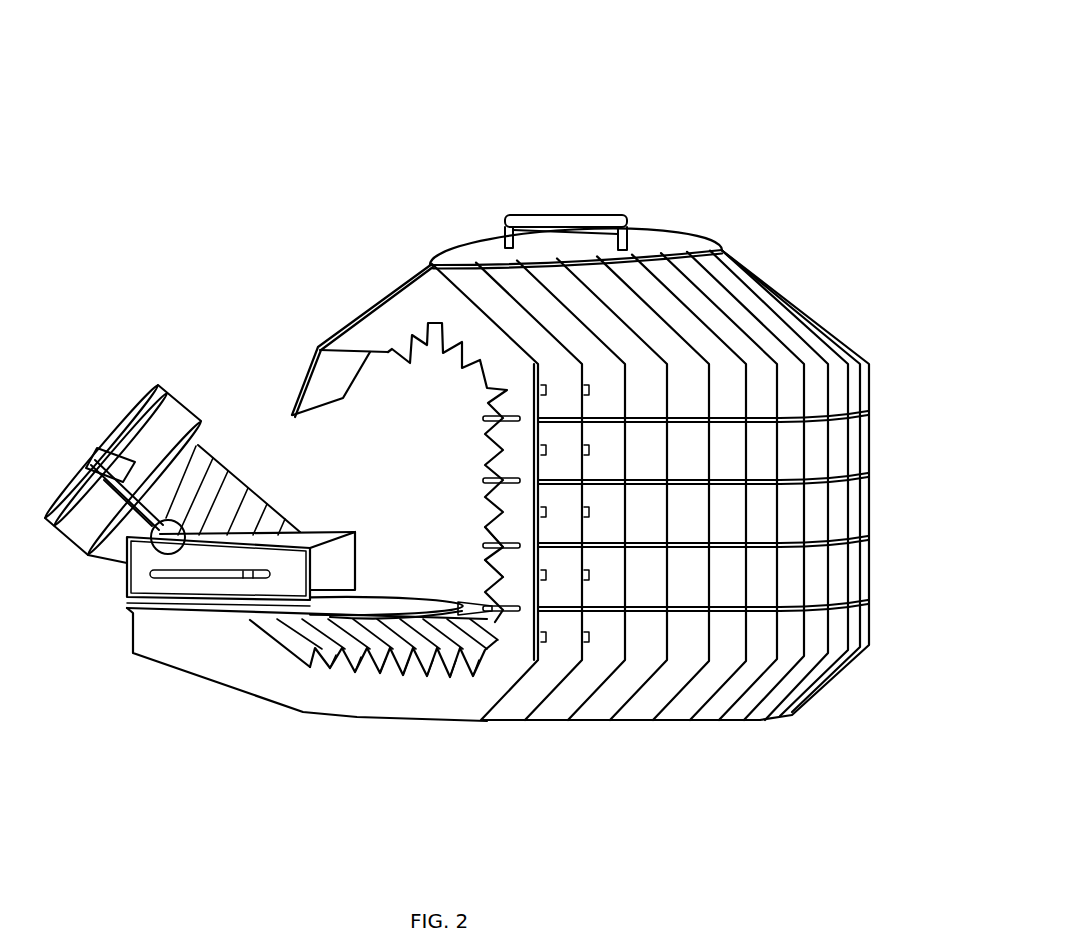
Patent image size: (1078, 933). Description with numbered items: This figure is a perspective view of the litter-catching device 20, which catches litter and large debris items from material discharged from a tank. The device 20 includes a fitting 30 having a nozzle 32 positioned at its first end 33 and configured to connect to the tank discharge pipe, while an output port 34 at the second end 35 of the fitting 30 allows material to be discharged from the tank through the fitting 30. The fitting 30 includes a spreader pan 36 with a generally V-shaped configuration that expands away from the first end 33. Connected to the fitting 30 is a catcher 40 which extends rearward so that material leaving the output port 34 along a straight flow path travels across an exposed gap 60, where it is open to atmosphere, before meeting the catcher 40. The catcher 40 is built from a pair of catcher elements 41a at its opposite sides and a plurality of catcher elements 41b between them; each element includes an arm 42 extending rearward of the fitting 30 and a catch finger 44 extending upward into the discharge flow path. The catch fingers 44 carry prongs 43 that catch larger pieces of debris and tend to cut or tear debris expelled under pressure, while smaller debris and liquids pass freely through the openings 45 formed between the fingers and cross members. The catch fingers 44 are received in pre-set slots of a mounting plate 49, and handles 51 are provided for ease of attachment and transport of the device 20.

The device 20 is at (235, 68).
The fitting 30 is at (136, 305).
The nozzle 32 is at (197, 388).
The first end 33 is at (90, 660).
The output port 34 is at (336, 571).
The second end 35 is at (306, 516).
The spreader pan 36 is at (430, 605).
The catcher 40 is at (709, 130).
The catcher element 41a is at (467, 713).
The catcher element 41b is at (516, 713).
The arm 42 is at (357, 698).
The prong 43 is at (488, 528).
The catch finger 44 is at (510, 525).
The opening 45 is at (648, 457).
The mounting plate 49 is at (464, 610).
The handle 51 is at (567, 217).
The exposed gap 60 is at (397, 479).